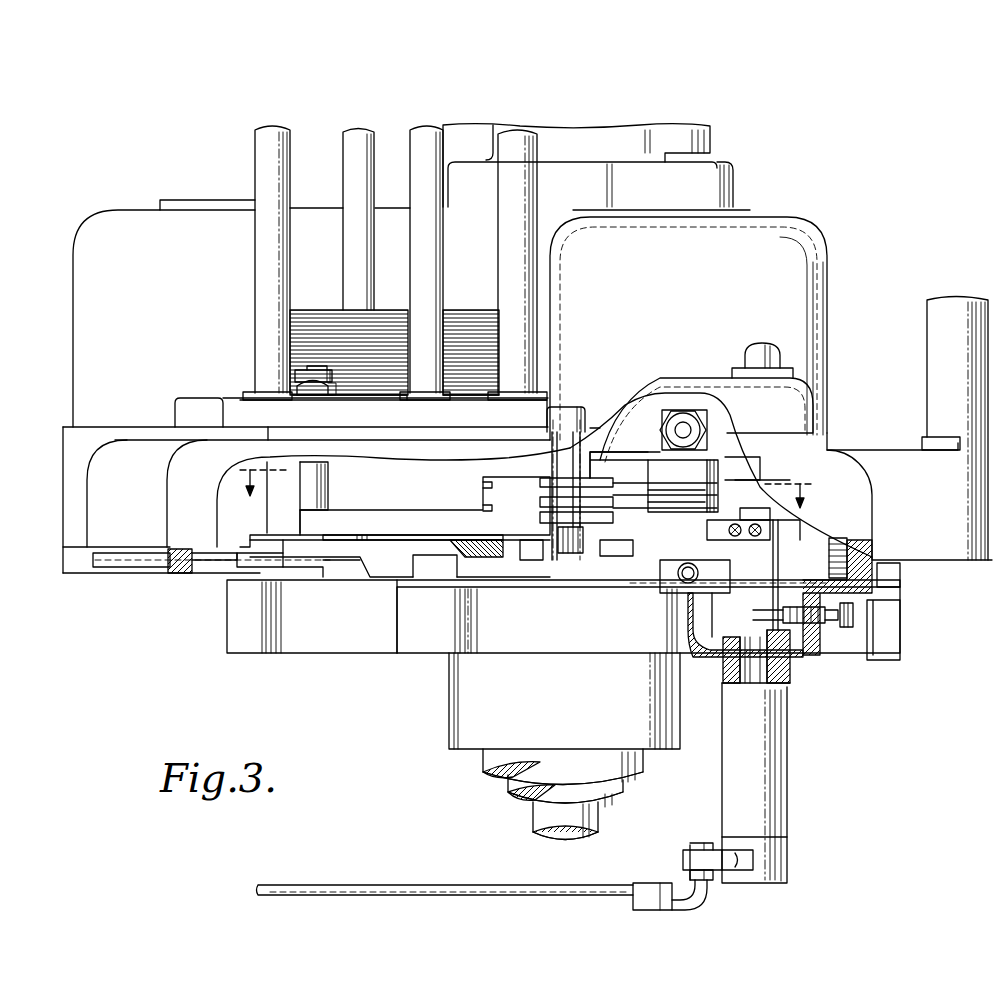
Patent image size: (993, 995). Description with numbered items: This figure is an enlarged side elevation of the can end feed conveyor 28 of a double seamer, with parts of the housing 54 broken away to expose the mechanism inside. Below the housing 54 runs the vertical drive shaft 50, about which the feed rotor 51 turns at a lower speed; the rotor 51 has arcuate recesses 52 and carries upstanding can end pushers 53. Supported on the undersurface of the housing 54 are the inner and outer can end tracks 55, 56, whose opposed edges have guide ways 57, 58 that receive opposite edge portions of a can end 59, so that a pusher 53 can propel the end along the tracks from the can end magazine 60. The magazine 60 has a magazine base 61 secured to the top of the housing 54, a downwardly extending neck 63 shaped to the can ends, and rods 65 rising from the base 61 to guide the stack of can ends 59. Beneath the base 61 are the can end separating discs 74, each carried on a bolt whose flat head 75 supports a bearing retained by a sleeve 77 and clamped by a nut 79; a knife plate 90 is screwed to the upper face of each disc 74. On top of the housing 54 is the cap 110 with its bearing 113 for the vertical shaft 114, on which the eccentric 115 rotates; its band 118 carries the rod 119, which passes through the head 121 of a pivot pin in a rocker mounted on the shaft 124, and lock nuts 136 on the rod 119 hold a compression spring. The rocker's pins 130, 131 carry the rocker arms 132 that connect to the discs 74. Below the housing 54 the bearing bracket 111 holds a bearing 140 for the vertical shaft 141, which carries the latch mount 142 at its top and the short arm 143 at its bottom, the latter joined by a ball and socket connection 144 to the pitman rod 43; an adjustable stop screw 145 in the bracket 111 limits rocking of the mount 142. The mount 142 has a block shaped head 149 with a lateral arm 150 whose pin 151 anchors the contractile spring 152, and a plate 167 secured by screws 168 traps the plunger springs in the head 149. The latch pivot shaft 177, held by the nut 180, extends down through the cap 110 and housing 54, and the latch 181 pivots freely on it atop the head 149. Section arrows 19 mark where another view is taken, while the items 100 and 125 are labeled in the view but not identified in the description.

The section line 19- 19 is at (528, 496).
The can end feed conveyor 28 is at (414, 652).
The pitman rod 43 is at (371, 885).
The vertical drive shaft 50 is at (533, 823).
The feed rotor 51 is at (452, 703).
The arcuate recesses 52 is at (299, 642).
The can end pushers 53 is at (409, 547).
The housing 54 is at (163, 427).
The inner can end track 55 is at (334, 571).
The outer can end track 56 is at (143, 567).
The guide way 57 is at (313, 562).
The guide way 58 is at (202, 561).
The can end 59 is at (318, 312).
The can end magazine 60 is at (252, 376).
The magazine base 61 is at (235, 402).
The neck 63 is at (262, 463).
The rods 65 is at (355, 247).
The can end separating discs 74 is at (358, 540).
The flat head 75 is at (300, 367).
The sleeve 77 is at (312, 488).
The nut 79 is at (315, 393).
The knife plate 90 is at (250, 534).
The worm 100 is at (450, 558).
The cap 110 is at (812, 403).
The bearing bracket 111 is at (815, 652).
The bearing 113 is at (720, 184).
The vertical shaft 114 is at (710, 157).
The eccentric 115 is at (618, 459).
The band 118 is at (640, 420).
The rod 119 is at (703, 428).
The head 121 is at (669, 410).
The shaft 124 is at (548, 436).
The bars 125 is at (650, 496).
The pin 130 is at (598, 540).
The pin 131 is at (538, 540).
The rocker arms 132 is at (590, 543).
The lock nuts 136 is at (684, 447).
The bearing 140 is at (778, 764).
The vertical shaft 141 is at (765, 680).
The latch mount 142 is at (780, 568).
The short arm 143 is at (734, 872).
The ball and socket connection 144 is at (688, 866).
The adjustable stop screw 145 is at (856, 605).
The block shaped head 149 is at (802, 521).
The arm 150 is at (682, 550).
The pin 151 is at (687, 592).
The contractile spring 152 is at (681, 582).
The plate 167 is at (862, 531).
The screws 168 is at (755, 537).
The latch pivot shaft 177 is at (752, 520).
The nut 180 is at (762, 341).
The latch 181 is at (790, 481).